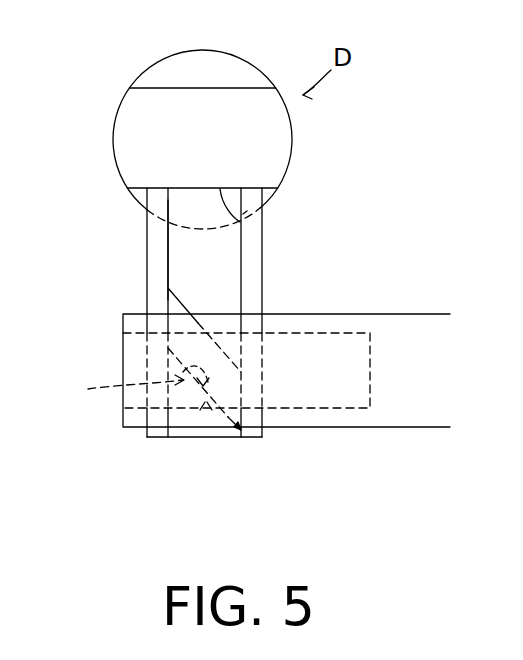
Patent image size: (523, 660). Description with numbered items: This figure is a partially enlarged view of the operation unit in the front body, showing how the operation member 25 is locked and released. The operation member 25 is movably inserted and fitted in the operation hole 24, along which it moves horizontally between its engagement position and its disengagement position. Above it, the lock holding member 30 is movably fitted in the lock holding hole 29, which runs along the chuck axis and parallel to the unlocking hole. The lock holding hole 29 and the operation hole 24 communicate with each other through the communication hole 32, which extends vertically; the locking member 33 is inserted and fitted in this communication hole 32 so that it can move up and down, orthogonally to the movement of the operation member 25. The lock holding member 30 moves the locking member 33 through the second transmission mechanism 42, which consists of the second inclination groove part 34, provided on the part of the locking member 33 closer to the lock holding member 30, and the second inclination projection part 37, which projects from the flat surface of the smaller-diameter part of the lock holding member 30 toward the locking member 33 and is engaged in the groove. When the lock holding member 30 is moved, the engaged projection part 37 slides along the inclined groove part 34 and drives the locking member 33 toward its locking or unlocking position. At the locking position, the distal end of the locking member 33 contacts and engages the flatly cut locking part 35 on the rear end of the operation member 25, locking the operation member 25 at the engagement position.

The operation hole 24 is at (117, 131).
The operation member 25 is at (199, 55).
The lock holding hole 29 is at (378, 313).
The lock holding member 30 is at (420, 322).
The communication hole 32 is at (150, 284).
The locking member 33 is at (176, 231).
The second inclination groove part 34 is at (203, 386).
The locking part 35 is at (240, 222).
The second inclination projection part 37 is at (228, 392).
The second transmission mechanism 42 is at (121, 390).